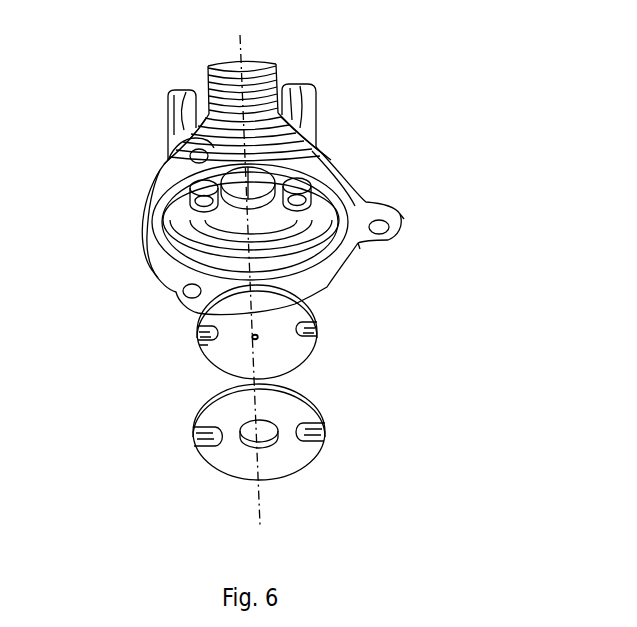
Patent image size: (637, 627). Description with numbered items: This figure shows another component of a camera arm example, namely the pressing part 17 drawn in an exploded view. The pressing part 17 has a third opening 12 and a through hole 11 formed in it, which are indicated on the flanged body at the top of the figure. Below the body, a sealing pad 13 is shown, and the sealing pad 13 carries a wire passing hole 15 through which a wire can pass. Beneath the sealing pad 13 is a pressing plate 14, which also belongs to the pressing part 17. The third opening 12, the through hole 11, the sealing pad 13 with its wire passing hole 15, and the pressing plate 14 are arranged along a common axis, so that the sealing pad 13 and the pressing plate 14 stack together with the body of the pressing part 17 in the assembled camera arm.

The pressing part 17 is at (292, 187).
The through hole 11 is at (209, 240).
The third opening 12 is at (302, 239).
The sealing pad 13 is at (299, 333).
The pressing plate 14 is at (296, 435).
The wire passing hole 15 is at (188, 361).